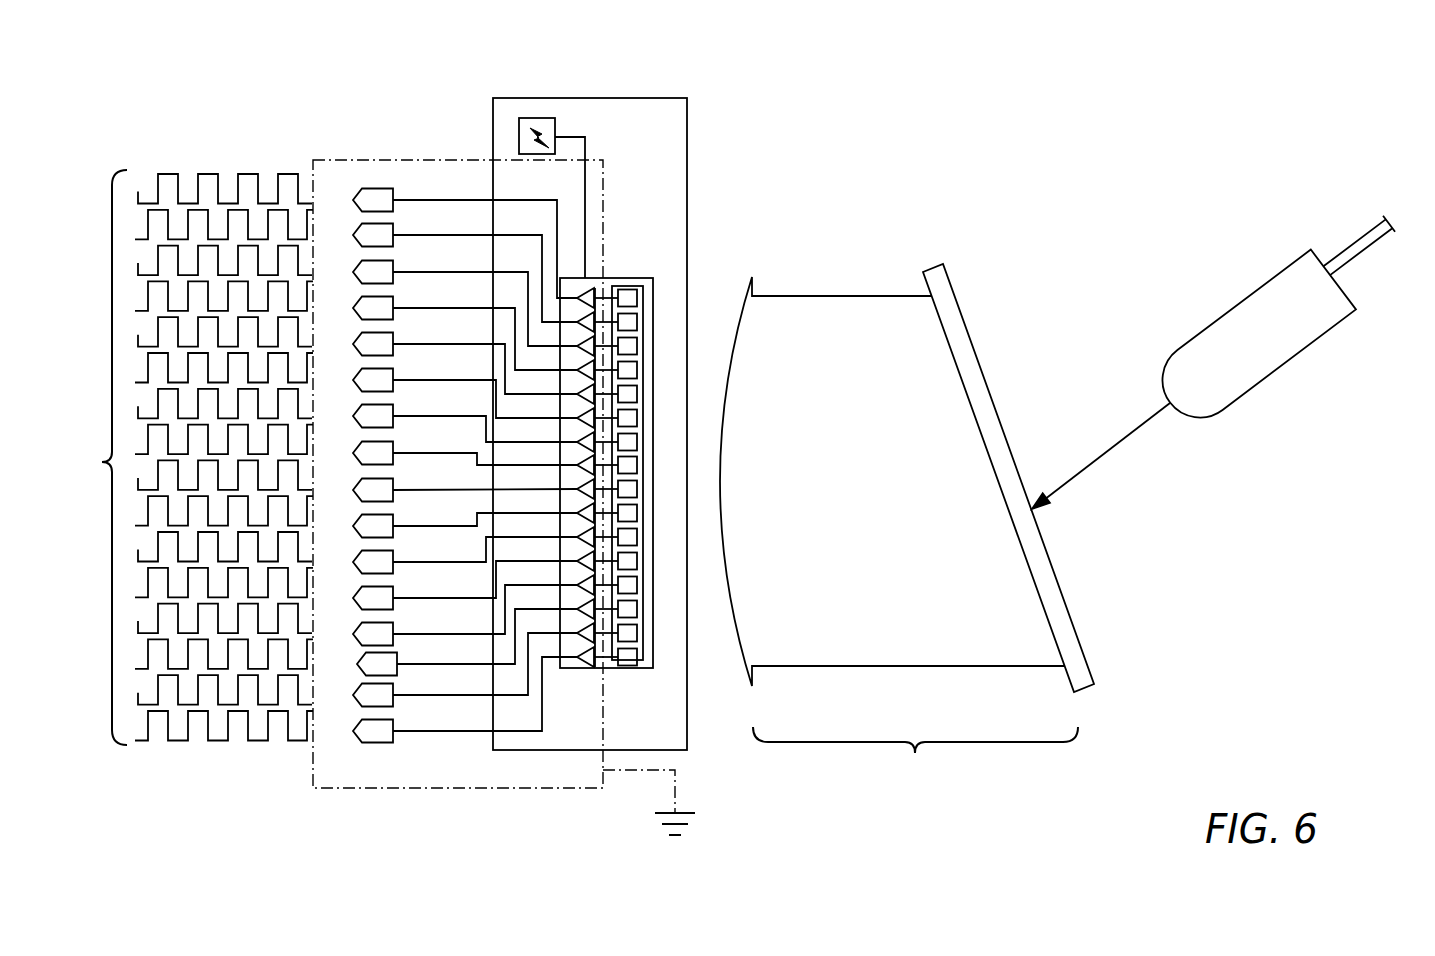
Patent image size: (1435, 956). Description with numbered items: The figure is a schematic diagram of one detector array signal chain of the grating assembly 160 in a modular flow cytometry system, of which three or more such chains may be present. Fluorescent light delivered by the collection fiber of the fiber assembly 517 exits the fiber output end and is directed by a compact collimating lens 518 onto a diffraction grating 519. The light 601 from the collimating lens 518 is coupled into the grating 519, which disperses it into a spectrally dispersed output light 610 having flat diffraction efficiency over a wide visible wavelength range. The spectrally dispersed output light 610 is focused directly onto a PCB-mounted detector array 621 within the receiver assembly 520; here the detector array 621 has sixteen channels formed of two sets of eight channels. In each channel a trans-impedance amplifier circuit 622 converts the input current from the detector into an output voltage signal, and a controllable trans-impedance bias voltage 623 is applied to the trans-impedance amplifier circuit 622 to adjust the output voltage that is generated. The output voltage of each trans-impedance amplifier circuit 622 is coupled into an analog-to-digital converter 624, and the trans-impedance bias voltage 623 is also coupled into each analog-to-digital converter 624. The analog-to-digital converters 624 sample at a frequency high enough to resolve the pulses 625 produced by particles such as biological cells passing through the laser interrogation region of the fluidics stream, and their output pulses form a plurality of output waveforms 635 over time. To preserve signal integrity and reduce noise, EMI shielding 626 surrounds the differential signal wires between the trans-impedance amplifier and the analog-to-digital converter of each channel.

The grating assembly 160 is at (1082, 116).
The fiber assembly 517 is at (1360, 252).
The collimating lens 518 is at (1258, 380).
The diffraction grating 519 is at (963, 320).
The receiver assembly 520 is at (650, 98).
The light 601 is at (1105, 455).
The spectrally dispersed output light 610 is at (899, 531).
The detector array 621 is at (640, 298).
The trans-impedance amplifier circuit 622 is at (603, 290).
The trans-impedance bias voltage 623 is at (537, 118).
The analog-to-digital converter 624 is at (378, 188).
The pulses 625 is at (207, 175).
The EMI shielding 626 is at (410, 788).
The output waveforms 635 is at (91, 457).